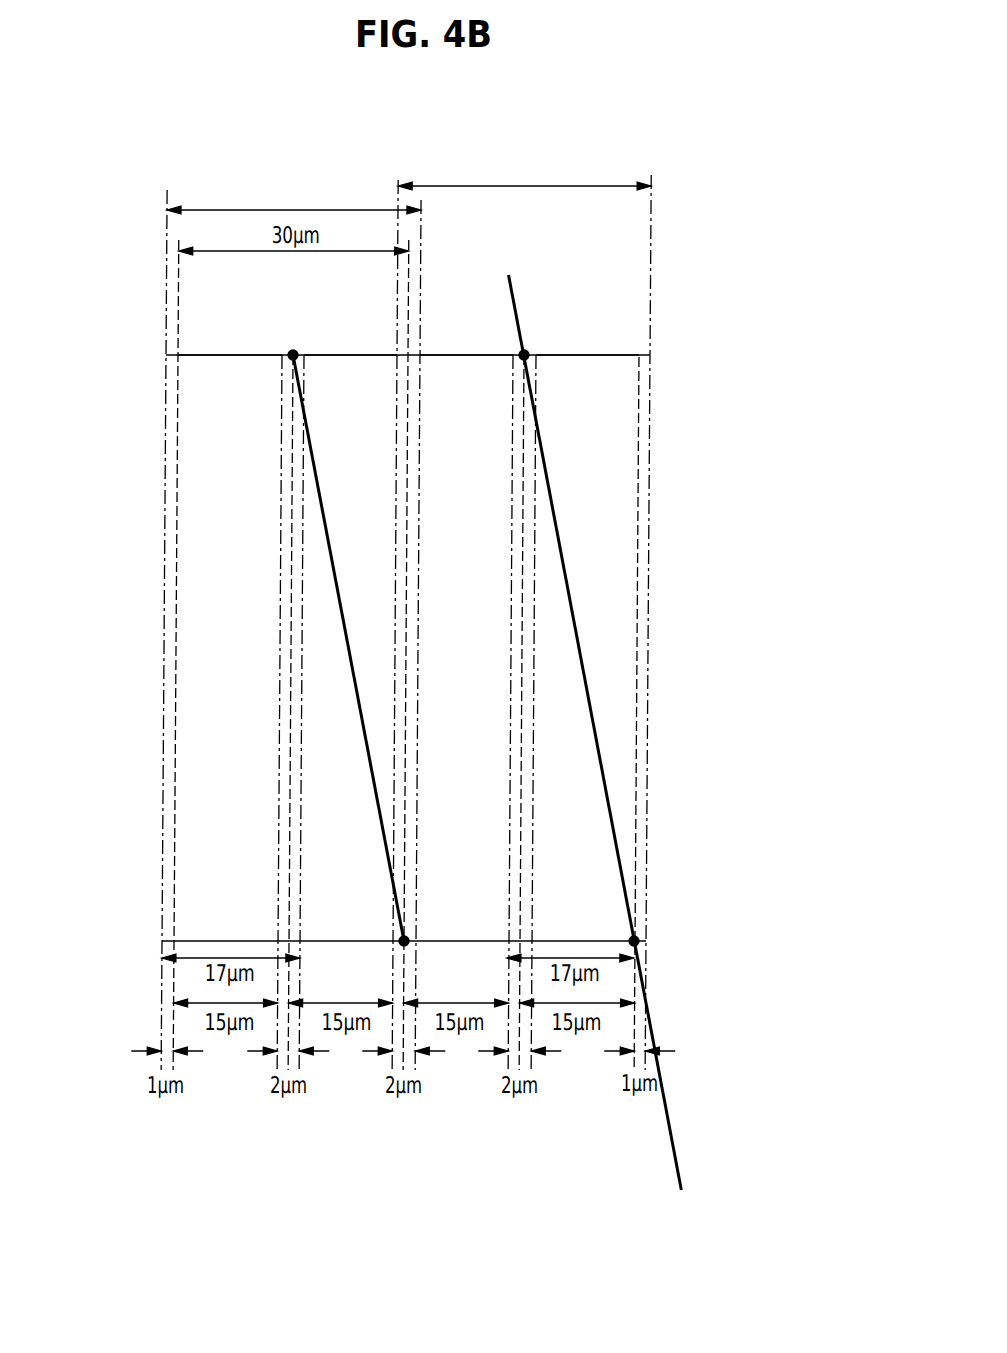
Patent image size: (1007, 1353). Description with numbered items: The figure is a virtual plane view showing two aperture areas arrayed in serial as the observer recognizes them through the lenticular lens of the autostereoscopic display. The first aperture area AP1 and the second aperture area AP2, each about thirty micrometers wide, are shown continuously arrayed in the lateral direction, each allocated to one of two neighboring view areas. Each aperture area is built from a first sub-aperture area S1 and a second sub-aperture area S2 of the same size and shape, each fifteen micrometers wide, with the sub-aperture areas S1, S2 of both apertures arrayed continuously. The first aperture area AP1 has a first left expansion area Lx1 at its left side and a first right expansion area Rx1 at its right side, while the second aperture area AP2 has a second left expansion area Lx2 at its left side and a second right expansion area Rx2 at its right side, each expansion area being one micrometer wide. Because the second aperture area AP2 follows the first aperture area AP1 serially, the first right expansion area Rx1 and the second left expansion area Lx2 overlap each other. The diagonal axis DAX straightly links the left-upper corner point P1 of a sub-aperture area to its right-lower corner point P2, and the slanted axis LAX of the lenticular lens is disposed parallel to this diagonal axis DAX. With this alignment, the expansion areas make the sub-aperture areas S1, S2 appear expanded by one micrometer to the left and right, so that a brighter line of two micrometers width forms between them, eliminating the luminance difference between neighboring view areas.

The first left expansion area Lx1 is at (167, 380).
The second left expansion area Lx2 is at (398, 365).
The first right expansion area Rx1 is at (416, 365).
The second right expansion area Rx2 is at (649, 380).
The first sub-aperture area S1 is at (231, 365).
The second sub-aperture area S2 is at (341, 365).
The first point P1 is at (293, 350).
The second point P2 is at (410, 937).
The diagonal axis DAX is at (331, 545).
The slanted axis LAX is at (676, 1142).
The first aperture area AP1 is at (294, 197).
The second aperture area AP2 is at (524, 173).